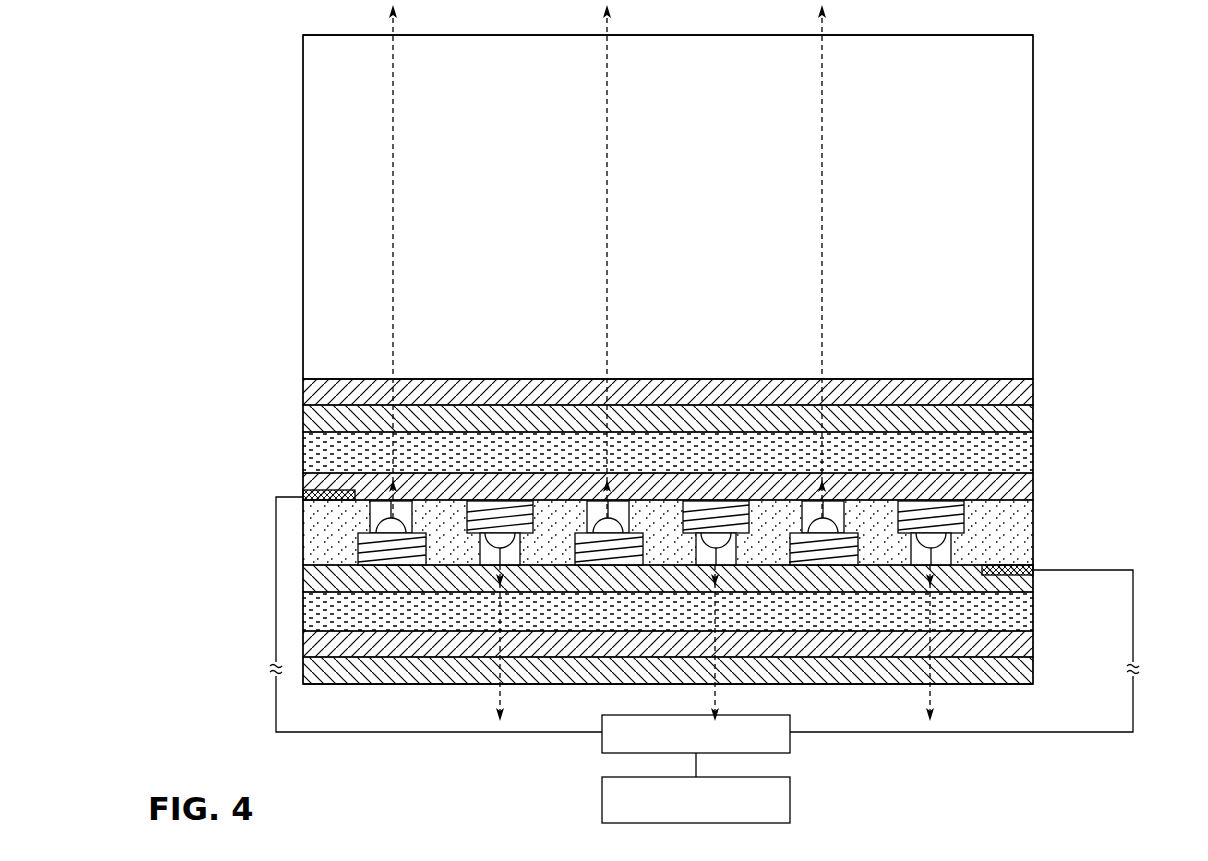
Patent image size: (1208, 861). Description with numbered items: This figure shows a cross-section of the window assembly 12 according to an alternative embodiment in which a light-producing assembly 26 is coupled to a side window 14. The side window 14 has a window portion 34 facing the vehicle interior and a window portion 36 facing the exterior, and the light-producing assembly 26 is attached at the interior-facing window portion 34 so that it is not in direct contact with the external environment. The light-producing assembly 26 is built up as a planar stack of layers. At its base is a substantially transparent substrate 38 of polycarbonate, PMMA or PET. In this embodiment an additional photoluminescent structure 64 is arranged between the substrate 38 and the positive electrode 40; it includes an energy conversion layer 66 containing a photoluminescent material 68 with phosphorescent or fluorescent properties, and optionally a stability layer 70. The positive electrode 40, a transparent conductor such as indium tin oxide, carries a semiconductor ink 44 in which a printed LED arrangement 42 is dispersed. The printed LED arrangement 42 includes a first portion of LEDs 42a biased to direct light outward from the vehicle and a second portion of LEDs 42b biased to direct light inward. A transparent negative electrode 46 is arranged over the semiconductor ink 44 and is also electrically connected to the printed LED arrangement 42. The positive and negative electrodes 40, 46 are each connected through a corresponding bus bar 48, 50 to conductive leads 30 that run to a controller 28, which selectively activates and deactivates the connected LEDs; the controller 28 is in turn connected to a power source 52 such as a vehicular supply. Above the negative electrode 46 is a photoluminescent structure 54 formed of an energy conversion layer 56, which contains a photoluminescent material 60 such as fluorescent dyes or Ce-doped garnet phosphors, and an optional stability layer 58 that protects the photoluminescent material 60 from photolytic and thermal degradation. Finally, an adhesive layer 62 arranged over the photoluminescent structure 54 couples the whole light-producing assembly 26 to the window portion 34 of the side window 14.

The window assembly 12 is at (1086, 132).
The side window 14 is at (1008, 262).
The light-producing assembly 26 is at (232, 383).
The controller 28 is at (790, 748).
The conductive leads 30 is at (276, 643).
The window portion 34 is at (995, 378).
The window portion 36 is at (993, 35).
The substrate 38 is at (1033, 670).
The positive electrode 40 is at (1033, 592).
The printed LED arrangement 42 is at (650, 615).
The first portion of LEDs 42a is at (400, 515).
The second portion of LEDs 42b is at (520, 520).
The semiconductor ink 44 is at (1010, 528).
The negative electrode 46 is at (1033, 490).
The bus bar 48 is at (1025, 567).
The bus bar 50 is at (303, 494).
The power source 52 is at (790, 795).
The photoluminescent structure 54 is at (666, 439).
The energy conversion layer 56 is at (303, 442).
The stability layer 58 is at (303, 418).
The photoluminescent material 60 is at (303, 455).
The adhesive layer 62 is at (666, 423).
The additional photoluminescent structure 64 is at (715, 636).
The energy conversion layer 66 is at (1033, 621).
The photoluminescent material 68 is at (1033, 608).
The stability layer 70 is at (692, 658).